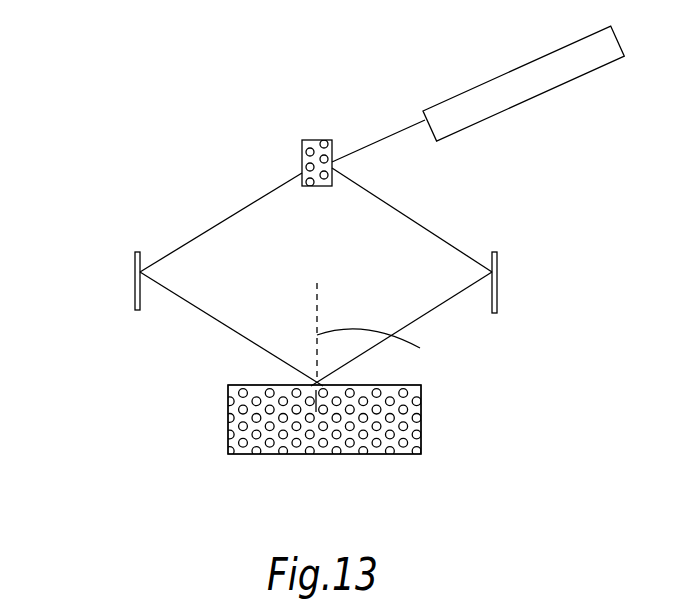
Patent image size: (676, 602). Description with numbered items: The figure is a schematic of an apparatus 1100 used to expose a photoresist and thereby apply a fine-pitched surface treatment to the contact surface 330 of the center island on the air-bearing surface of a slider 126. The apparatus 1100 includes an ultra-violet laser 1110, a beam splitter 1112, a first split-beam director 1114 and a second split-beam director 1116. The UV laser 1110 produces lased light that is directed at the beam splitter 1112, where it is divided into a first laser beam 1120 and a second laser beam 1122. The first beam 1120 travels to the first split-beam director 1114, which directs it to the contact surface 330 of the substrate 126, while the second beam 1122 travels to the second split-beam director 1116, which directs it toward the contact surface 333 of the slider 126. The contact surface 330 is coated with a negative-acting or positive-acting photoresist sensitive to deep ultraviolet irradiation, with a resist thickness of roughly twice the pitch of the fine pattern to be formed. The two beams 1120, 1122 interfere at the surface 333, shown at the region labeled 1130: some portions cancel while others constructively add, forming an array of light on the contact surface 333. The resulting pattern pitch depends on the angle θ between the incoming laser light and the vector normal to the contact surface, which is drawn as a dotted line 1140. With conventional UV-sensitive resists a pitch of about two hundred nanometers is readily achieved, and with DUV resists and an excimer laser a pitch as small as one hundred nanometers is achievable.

The apparatus 1100 is at (130, 64).
The ultra-violet laser 1110 is at (580, 77).
The beam splitter 1112 is at (312, 140).
The first split-beam director 1114 is at (135, 280).
The second split-beam director 1116 is at (497, 283).
The first laser beam 1120 is at (240, 212).
The second laser beam 1122 is at (402, 213).
The beam interference region 1130 is at (320, 382).
The normal vector 1140 is at (389, 352).
The contact surface 330 is at (392, 455).
The contact surface 333 is at (352, 442).
The slider 126 is at (253, 438).